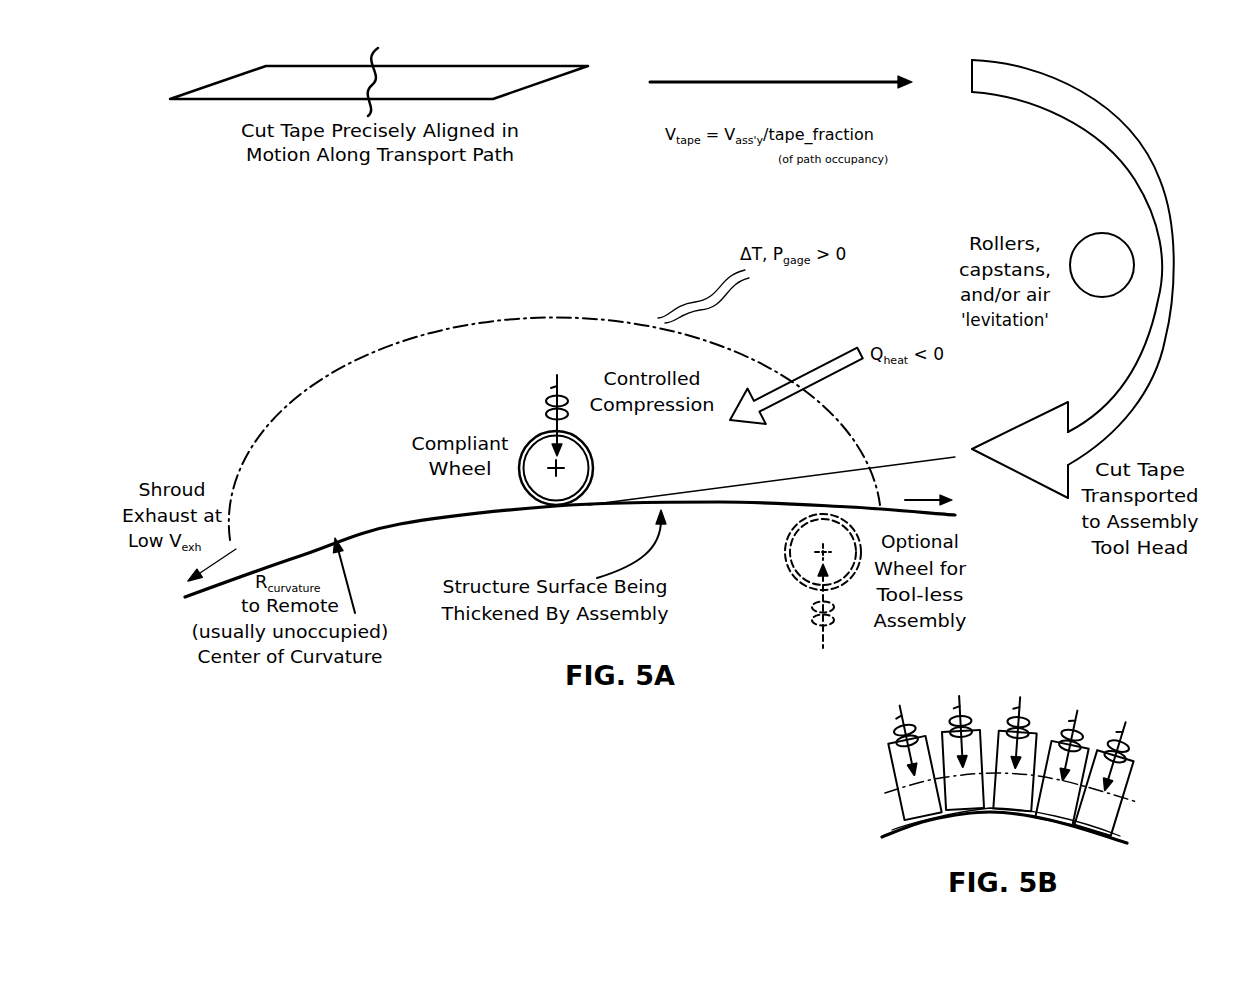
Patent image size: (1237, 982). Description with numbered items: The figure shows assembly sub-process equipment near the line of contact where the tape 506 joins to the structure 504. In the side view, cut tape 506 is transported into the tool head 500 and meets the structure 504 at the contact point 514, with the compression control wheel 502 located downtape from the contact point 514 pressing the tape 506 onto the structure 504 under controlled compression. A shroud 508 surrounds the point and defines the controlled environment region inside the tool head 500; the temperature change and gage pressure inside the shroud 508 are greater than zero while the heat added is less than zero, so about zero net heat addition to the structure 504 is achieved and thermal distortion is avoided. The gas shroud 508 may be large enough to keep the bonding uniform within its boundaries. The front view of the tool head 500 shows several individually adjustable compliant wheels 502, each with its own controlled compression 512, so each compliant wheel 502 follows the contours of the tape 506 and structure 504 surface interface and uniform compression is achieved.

In FIG. 5A, the tool head 500 is at (292, 346).
In FIG. 5A, the compliant wheel 502 is at (536, 440).
In FIG. 5B, the compliant wheel 502 is at (888, 757).
In FIG. 5A, the structure 504 is at (581, 544).
In FIG. 5B, the structure 504 is at (893, 829).
In FIG. 5A, the tape 506 is at (530, 80).
In FIG. 5A, the shroud 508 is at (452, 332).
In FIG. 5B, the controlled compression 512 is at (1027, 690).
In FIG. 5A, the contact point 514 is at (598, 499).